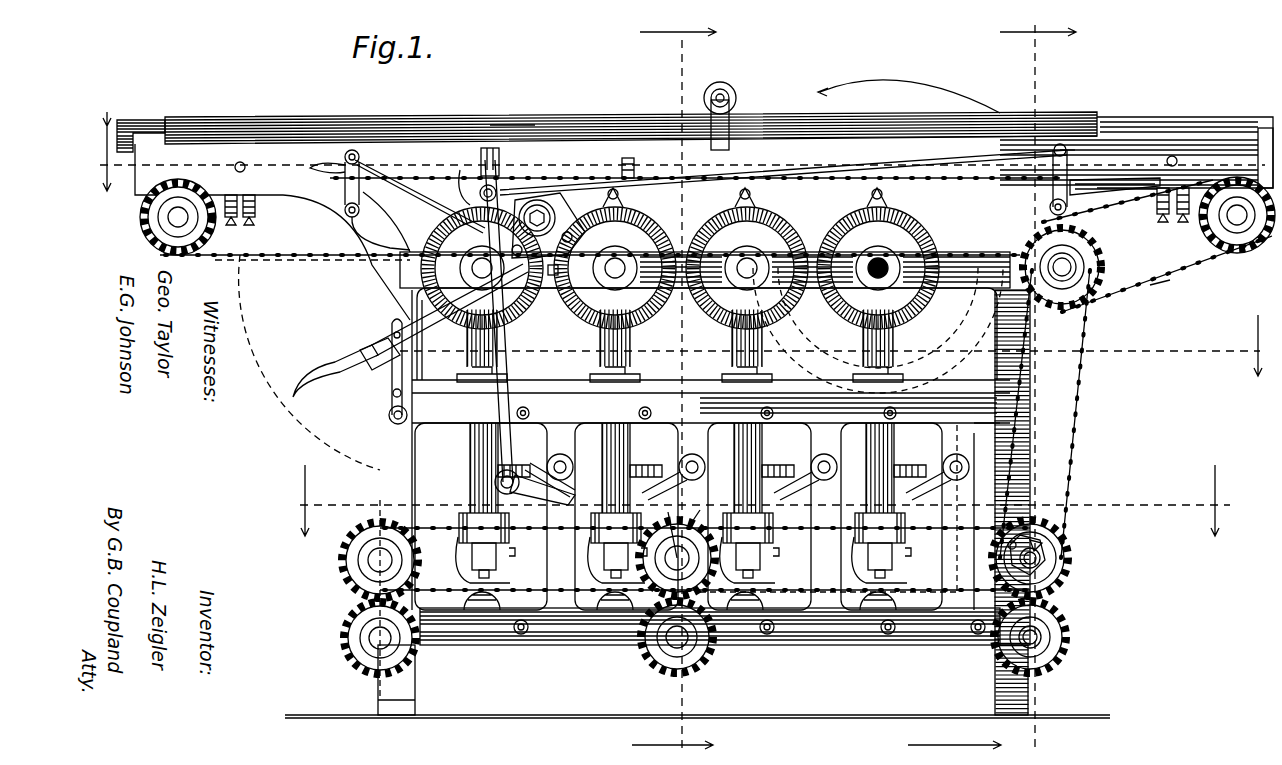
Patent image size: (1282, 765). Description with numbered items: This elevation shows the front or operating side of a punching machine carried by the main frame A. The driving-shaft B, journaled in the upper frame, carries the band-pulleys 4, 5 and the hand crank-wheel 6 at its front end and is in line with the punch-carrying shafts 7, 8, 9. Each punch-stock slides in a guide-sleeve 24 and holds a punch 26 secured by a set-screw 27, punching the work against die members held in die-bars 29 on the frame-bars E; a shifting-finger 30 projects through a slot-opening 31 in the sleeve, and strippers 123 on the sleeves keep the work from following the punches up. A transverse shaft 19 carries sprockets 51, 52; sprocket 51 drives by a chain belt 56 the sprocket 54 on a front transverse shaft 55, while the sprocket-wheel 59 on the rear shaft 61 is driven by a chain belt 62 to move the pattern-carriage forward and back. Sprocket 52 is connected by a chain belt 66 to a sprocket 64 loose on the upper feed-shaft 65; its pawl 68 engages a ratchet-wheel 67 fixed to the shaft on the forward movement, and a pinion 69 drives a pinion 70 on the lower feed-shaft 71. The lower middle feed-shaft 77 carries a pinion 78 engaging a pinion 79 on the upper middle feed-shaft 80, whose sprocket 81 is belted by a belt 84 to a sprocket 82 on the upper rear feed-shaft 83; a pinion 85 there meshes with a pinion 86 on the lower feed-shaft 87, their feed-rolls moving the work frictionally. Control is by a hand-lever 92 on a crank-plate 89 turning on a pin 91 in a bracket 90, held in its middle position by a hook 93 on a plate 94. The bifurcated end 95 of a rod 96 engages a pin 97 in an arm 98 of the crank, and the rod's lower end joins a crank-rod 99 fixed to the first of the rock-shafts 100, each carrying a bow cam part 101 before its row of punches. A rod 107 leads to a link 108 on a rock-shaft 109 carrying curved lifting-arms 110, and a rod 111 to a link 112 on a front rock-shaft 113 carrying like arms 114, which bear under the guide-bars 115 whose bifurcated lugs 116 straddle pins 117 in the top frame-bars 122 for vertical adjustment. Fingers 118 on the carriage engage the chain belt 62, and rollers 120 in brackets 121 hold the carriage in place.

The power band-pulley 4 is at (676, 151).
The power band-pulley 5 is at (838, 225).
The hand crank-wheel 6 is at (762, 298).
The punch-carrying shaft 7 is at (738, 269).
The punch-carrying shaft 8 is at (674, 378).
The punch-carrying shaft 9 is at (992, 375).
The transverse shaft 19 is at (1080, 270).
The guide-sleeve 24 is at (700, 370).
The punch 26 is at (492, 570).
The set-screw 27 is at (505, 550).
The die-bar 29 is at (512, 598).
The shifting-finger 30 is at (712, 454).
The vertical slot-opening 31 is at (630, 440).
The sprocket 51 is at (1100, 235).
The sprocket 52 is at (1070, 300).
The sprocket 54 is at (1237, 228).
The transverse shaft 55 is at (1235, 232).
The chain belt 56 is at (1167, 292).
The sprocket-wheel 59 is at (150, 232).
The shaft 61 is at (168, 218).
The chain belt 62 is at (305, 262).
The sprocket 64 is at (1050, 545).
The upper feed-shaft 65 is at (1040, 557).
The chain belt 66 is at (1075, 476).
The ratchet-wheel 67 is at (1048, 575).
The pawl 68 is at (1030, 535).
The pinion 69 is at (1040, 535).
The pinion 70 is at (1056, 640).
The lower feed-shaft 71 is at (1040, 640).
The lower middle feed-shaft 77 is at (660, 665).
The pinion 78 is at (679, 648).
The pinion 79 is at (700, 505).
The upper middle feed-shaft 80 is at (672, 522).
The sprocket 81 is at (640, 605).
The sprocket 82 is at (362, 535).
The upper rear feed-shaft 83 is at (360, 550).
The belt 84 is at (425, 540).
The pinion 85 is at (368, 560).
The pinion 86 is at (345, 628).
The lower feed-shaft 87 is at (372, 640).
The crank-plate 89 is at (538, 200).
The bracket 90 is at (705, 286).
The pin 91 is at (552, 200).
The hand-lever 92 is at (330, 372).
The hook 93 is at (390, 330).
The plate 94 is at (388, 412).
The bifurcated end 95 is at (487, 148).
The rod 96 is at (500, 358).
The pin 97 is at (454, 174).
The arm 98 is at (512, 129).
The crank-rod 99 is at (512, 495).
The rock-shaft 100 is at (550, 460).
The bow cam part 101 is at (490, 470).
The rod 107 is at (420, 195).
The link 108 is at (345, 185).
The rock-shaft 109 is at (345, 211).
The curved lifting-arm 110 is at (352, 150).
The rod 111 is at (652, 178).
The link 112 is at (1115, 190).
The rock-shaft 113 is at (1051, 207).
The curved lifting-arm 114 is at (1065, 150).
The guide-bar 115 is at (145, 110).
The bifurcated lug 116 is at (243, 217).
The pin 117 is at (245, 163).
The finger 118 is at (628, 158).
The roller 120 is at (730, 88).
The bracket 121 is at (728, 125).
The top frame-bar 122 is at (704, 156).
The stripper 123 is at (694, 567).
The main frame A is at (1040, 385).
The driving-shaft B is at (878, 290).
The frame-bar E is at (697, 663).